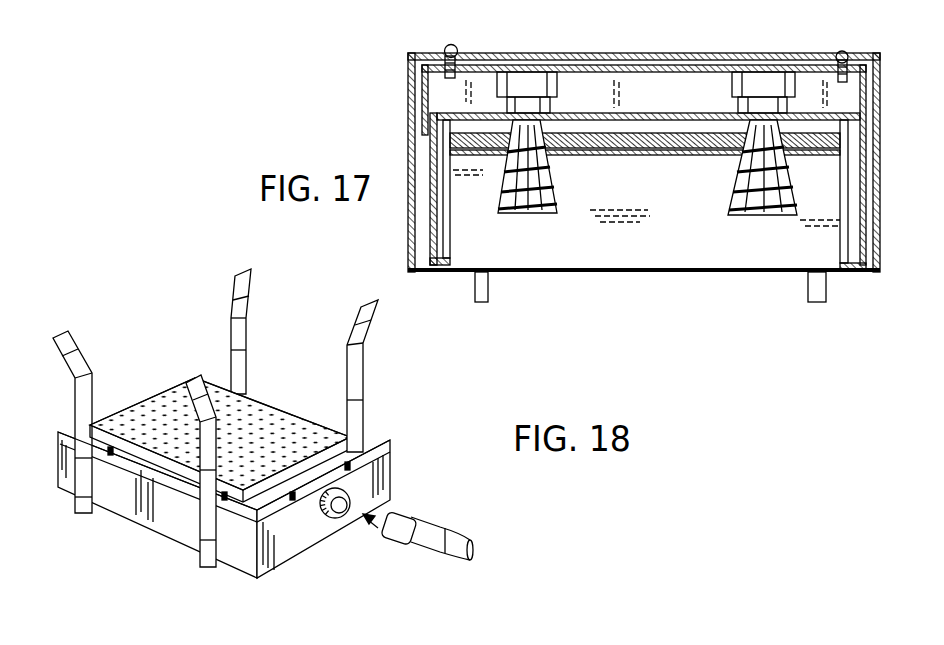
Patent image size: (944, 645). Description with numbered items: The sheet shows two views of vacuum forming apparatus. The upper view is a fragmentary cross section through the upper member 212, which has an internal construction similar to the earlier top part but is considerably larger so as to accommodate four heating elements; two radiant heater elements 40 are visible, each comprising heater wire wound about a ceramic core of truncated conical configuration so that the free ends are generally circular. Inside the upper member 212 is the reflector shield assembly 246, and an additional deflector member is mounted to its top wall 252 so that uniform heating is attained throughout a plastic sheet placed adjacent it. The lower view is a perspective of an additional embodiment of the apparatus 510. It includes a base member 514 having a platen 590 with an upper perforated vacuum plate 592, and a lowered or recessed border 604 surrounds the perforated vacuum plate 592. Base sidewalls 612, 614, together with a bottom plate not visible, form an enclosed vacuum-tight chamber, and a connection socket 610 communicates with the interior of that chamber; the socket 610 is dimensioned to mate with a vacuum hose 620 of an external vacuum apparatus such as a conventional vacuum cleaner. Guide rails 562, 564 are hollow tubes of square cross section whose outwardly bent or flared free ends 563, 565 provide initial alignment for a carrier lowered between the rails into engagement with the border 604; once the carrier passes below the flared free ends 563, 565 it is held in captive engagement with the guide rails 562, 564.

In FIG. 17, the upper member 212 is at (700, 45).
In FIG. 17, the top wall 252 is at (608, 158).
In FIG. 17, the radiant heater element 40 is at (548, 217).
In FIG. 17, the reflector shield assembly 246 is at (657, 282).
In FIG. 18, the vacuum forming apparatus 510 is at (158, 305).
In FIG. 18, the flared free end 565 is at (72, 336).
In FIG. 18, the guide rail 564 is at (93, 396).
In FIG. 18, the flared free end 563 is at (196, 353).
In FIG. 18, the guide rail 562 is at (366, 372).
In FIG. 18, the platen 590 is at (268, 390).
In FIG. 18, the recessed border 604 is at (374, 440).
In FIG. 18, the perforated vacuum plate 592 is at (393, 452).
In FIG. 18, the base member 514 is at (405, 477).
In FIG. 18, the vacuum hose 620 is at (413, 516).
In FIG. 18, the connection socket 610 is at (332, 533).
In FIG. 18, the base sidewall 612 is at (278, 557).
In FIG. 18, the base sidewall 614 is at (124, 505).